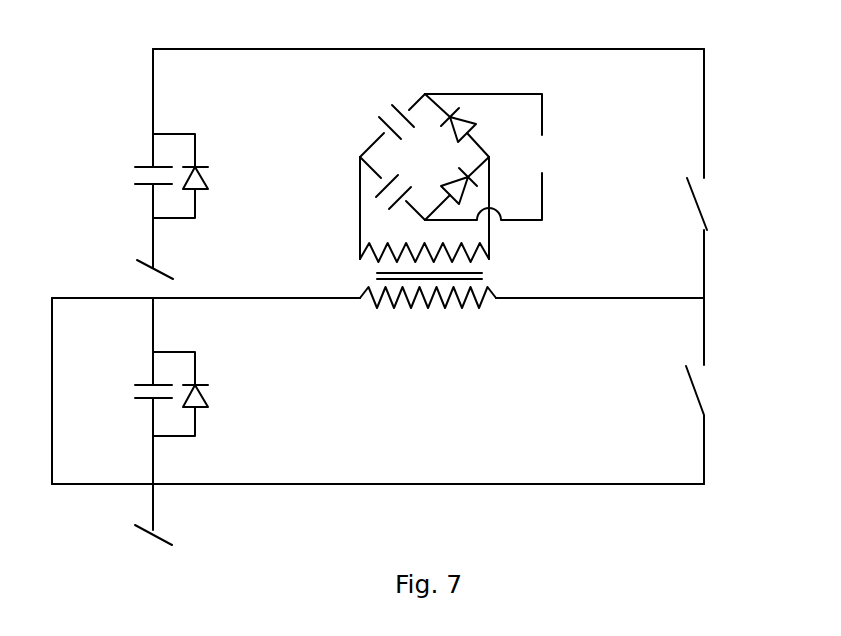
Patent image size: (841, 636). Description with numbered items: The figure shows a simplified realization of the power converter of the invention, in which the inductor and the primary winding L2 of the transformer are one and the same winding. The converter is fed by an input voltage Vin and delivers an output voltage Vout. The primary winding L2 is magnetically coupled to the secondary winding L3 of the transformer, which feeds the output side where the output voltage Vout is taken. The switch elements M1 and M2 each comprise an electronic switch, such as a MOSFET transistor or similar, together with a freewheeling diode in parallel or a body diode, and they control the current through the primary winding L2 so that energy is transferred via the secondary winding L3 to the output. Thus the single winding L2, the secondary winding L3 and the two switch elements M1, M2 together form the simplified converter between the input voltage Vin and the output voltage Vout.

The primary winding L2 is at (428, 310).
The secondary winding L3 is at (409, 209).
The switch element M1 is at (676, 391).
The switch element M2 is at (677, 173).
The input voltage Vin is at (49, 391).
The output voltage Vout is at (497, 157).